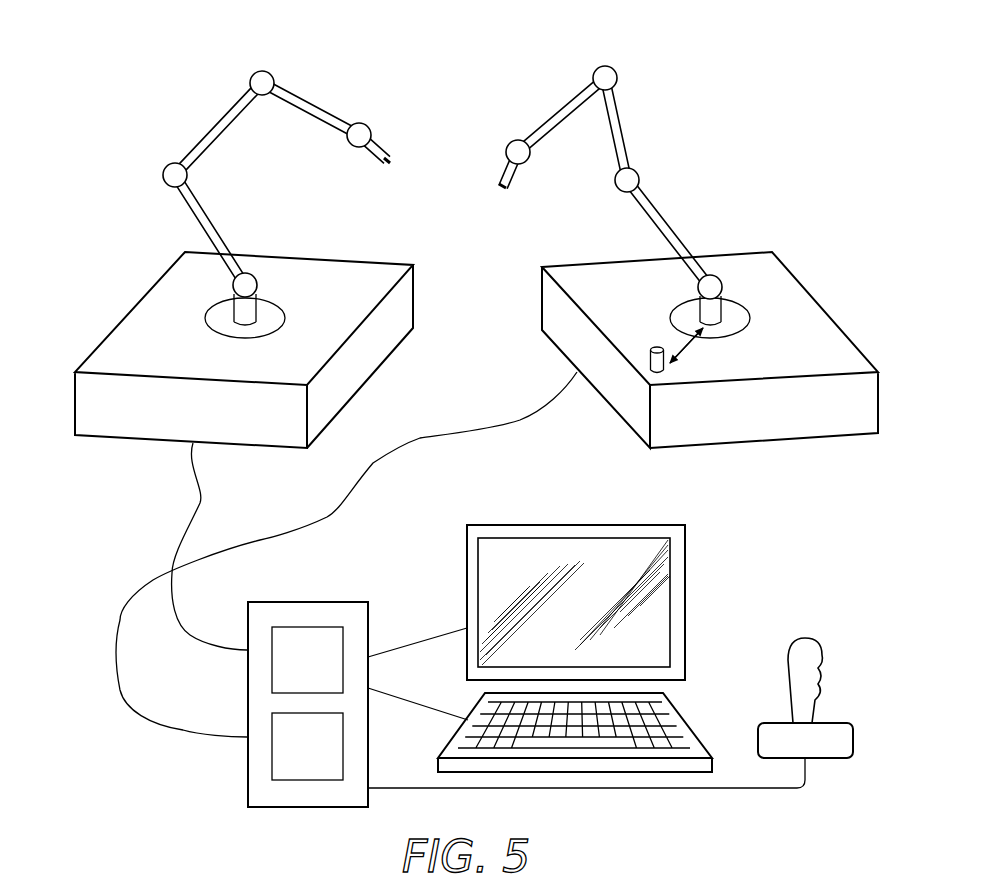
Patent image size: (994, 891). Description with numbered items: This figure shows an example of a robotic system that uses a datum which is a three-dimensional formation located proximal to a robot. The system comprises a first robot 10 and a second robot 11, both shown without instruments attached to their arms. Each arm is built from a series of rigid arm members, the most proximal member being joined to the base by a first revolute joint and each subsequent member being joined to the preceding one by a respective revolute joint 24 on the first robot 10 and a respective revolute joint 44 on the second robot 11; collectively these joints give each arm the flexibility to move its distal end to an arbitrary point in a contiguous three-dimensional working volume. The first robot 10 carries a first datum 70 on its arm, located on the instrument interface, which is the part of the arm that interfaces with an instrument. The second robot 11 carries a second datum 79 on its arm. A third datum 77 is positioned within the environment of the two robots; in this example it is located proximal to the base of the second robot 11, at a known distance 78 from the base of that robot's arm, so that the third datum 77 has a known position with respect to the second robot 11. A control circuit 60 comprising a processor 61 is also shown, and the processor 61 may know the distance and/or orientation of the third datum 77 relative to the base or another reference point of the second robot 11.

The first robot 10 is at (125, 254).
The second robot 11 is at (764, 230).
The revolute joint 24 is at (262, 72).
The revolute joint 44 is at (607, 70).
The first datum 70 is at (388, 163).
The second datum 79 is at (507, 189).
The third datum 77 is at (646, 374).
The distance 78 is at (687, 348).
The control circuit 60 is at (762, 540).
The processor 61 is at (342, 602).